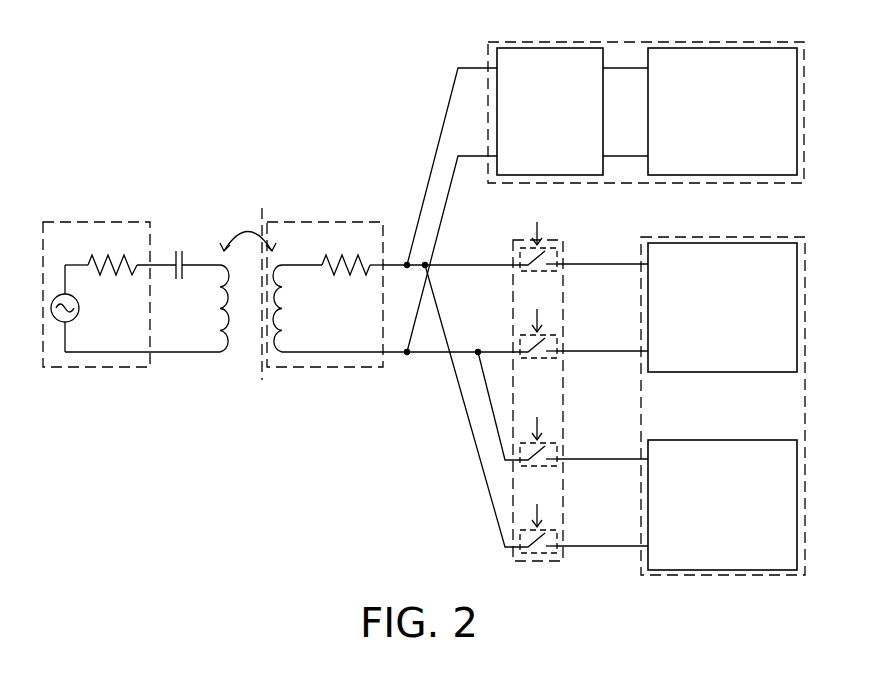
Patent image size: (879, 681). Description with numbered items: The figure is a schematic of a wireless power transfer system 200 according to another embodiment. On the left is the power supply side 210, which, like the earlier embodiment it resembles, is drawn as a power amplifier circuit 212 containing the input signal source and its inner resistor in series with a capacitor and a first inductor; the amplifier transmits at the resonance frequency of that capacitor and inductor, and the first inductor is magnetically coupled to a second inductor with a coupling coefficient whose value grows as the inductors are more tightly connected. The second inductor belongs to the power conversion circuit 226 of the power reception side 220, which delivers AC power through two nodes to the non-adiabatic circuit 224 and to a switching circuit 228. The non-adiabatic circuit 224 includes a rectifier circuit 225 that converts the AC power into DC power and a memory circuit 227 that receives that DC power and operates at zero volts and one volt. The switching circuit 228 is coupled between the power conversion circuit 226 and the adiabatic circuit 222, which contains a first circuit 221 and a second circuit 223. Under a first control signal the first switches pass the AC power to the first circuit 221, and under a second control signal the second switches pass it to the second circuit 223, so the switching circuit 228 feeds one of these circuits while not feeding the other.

The WPT system 200 is at (112, 537).
The transmitter 210 is at (152, 167).
The power source 212 is at (92, 222).
The power reception side 220 is at (363, 113).
The first circuit 221 is at (735, 243).
The adiabatic circuit 222 is at (722, 578).
The second circuit 223 is at (733, 440).
The non-adiabatic circuit 224 is at (655, 42).
The rectifier circuit 225 is at (540, 48).
The power conversion circuit 226 is at (340, 222).
The memory circuit 227 is at (735, 48).
The switching circuit 228 is at (522, 561).